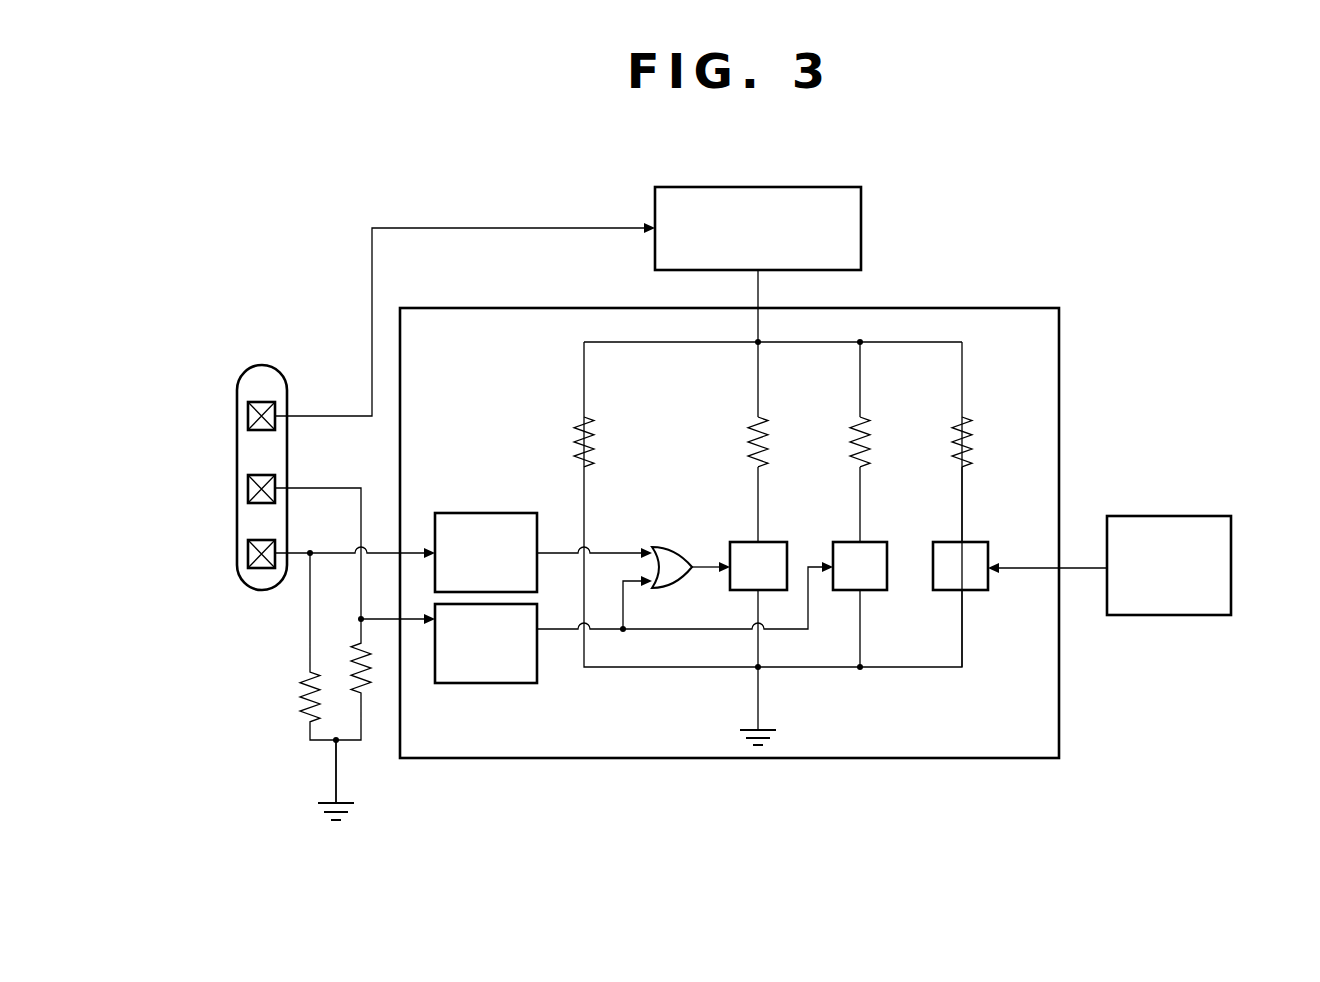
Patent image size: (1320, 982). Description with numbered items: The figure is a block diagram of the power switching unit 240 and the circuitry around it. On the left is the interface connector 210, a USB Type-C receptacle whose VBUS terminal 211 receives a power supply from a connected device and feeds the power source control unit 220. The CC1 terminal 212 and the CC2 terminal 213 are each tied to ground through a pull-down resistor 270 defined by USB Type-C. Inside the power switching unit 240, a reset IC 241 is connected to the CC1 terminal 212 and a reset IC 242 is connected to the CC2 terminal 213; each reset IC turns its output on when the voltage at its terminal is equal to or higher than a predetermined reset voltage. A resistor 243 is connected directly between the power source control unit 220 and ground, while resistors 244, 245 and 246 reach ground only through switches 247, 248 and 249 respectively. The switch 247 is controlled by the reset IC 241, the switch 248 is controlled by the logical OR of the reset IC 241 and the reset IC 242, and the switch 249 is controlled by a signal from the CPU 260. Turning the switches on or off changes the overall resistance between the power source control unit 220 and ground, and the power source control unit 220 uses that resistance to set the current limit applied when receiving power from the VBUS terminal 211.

The interface connector 210 is at (262, 366).
The VBUS terminal 211 is at (247, 416).
The CC1 terminal 212 is at (247, 489).
The CC2 terminal 213 is at (247, 552).
The power source control unit 220 is at (863, 213).
The power switching unit 240 is at (1018, 306).
The reset IC 241 is at (497, 687).
The reset IC 242 is at (493, 512).
The resistor 243 is at (588, 417).
The resistor 244 is at (864, 417).
The resistor 245 is at (762, 417).
The resistor 246 is at (966, 417).
The switch 247 is at (873, 541).
The switch 248 is at (772, 541).
The switch 249 is at (974, 541).
The CPU 260 is at (1177, 515).
The pull-down resistor 270 is at (360, 660).